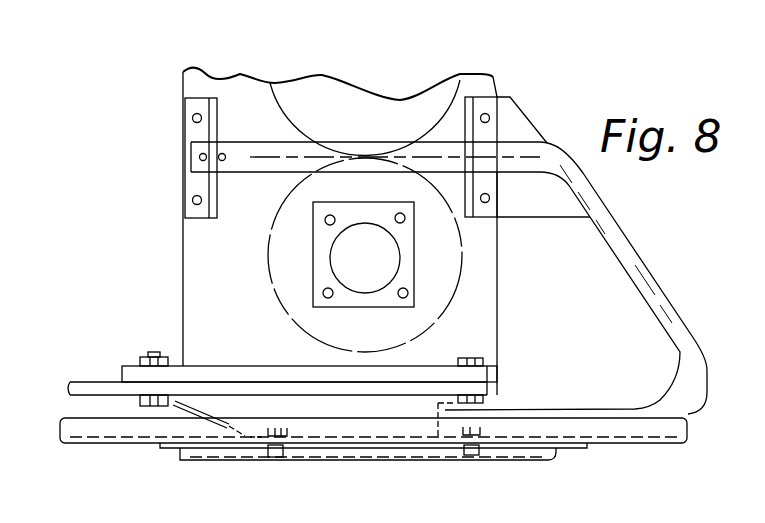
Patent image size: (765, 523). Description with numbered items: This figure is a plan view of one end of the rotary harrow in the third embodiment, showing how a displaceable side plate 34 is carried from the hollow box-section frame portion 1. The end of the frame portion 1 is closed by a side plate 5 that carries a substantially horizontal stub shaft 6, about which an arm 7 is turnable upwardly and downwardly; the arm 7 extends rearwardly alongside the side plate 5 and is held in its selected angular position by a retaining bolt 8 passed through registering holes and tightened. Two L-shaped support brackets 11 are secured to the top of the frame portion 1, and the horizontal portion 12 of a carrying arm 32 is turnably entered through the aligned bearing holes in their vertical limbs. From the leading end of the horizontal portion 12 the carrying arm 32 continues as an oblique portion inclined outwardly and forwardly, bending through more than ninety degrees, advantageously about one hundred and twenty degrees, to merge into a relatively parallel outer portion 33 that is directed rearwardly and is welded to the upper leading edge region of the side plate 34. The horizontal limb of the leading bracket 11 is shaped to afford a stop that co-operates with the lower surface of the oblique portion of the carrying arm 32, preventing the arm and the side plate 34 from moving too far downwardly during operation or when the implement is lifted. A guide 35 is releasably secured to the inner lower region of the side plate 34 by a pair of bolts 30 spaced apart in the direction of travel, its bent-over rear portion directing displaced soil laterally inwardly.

The hollow box-section frame portion 1 is at (364, 82).
The support bracket 11 is at (190, 126).
The horizontal portion 12 is at (350, 122).
The carrying arm 32 is at (607, 259).
The side plate 5 is at (225, 366).
The stub shaft 6 is at (475, 358).
The arm 7 is at (85, 383).
The retaining bolt 8 is at (155, 352).
The bolt 30 is at (282, 408).
The outer portion 33 is at (540, 416).
The displaceable side plate 34 is at (125, 453).
The guide 35 is at (345, 437).